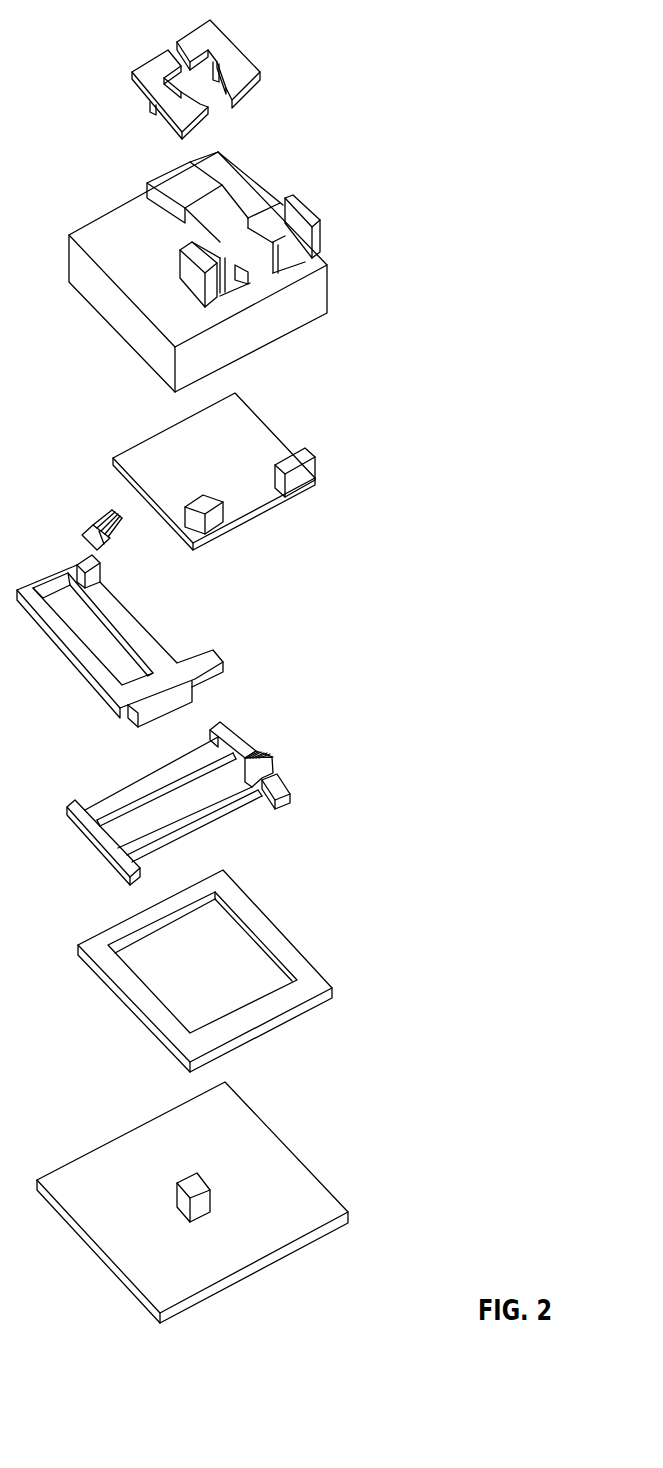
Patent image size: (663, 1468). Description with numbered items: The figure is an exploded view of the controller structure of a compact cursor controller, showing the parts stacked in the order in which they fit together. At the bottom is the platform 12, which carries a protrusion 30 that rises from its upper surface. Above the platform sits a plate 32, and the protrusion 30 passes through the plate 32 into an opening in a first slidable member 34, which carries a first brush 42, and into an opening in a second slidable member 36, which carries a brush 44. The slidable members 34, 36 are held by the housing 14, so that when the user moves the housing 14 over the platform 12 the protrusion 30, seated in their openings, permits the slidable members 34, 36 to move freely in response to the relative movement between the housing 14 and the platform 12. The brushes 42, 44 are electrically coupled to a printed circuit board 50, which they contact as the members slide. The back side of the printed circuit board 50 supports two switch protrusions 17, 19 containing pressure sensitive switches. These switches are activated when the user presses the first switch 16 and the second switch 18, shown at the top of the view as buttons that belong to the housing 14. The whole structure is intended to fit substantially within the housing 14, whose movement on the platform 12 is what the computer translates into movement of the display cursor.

The platform 12 is at (337, 1197).
The housing 14 is at (283, 340).
The first switch 16 is at (158, 52).
The switch protrusion 17 is at (203, 495).
The second switch 18 is at (207, 22).
The switch protrusion 19 is at (313, 470).
The protrusion 30 is at (230, 1191).
The plate 32 is at (323, 973).
The first slidable member 34 is at (196, 801).
The second slidable member 36 is at (43, 632).
The first brush 42 is at (272, 755).
The brush 44 is at (83, 542).
The printed circuit board 50 is at (260, 518).